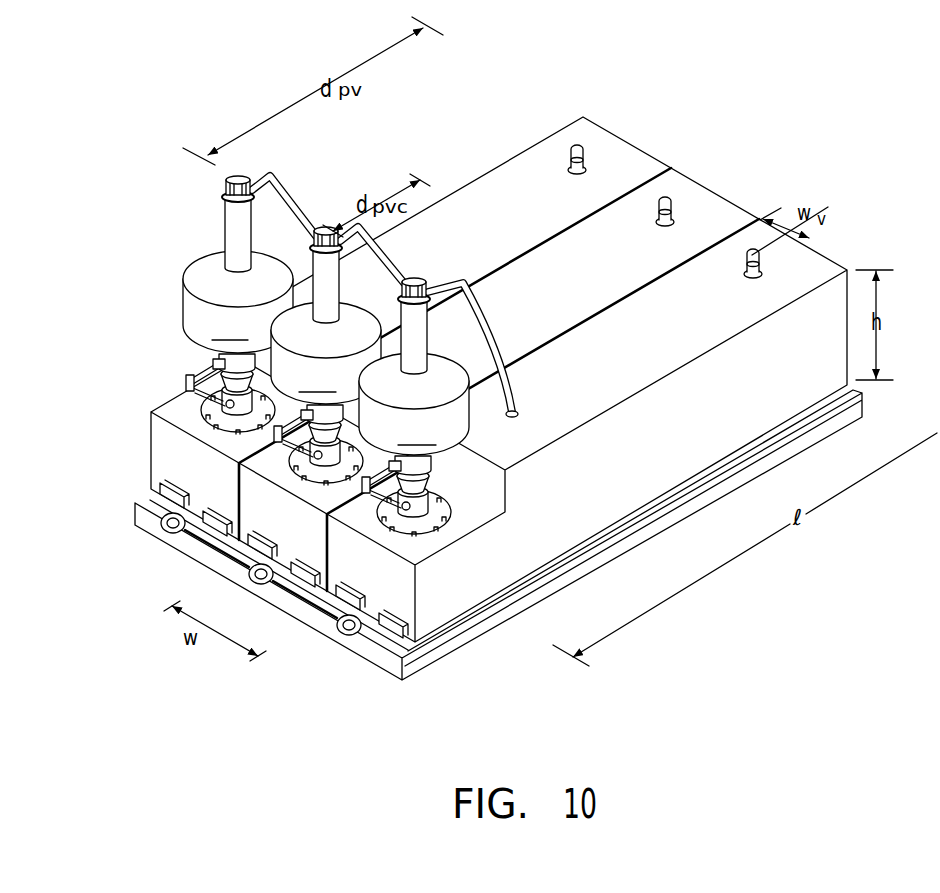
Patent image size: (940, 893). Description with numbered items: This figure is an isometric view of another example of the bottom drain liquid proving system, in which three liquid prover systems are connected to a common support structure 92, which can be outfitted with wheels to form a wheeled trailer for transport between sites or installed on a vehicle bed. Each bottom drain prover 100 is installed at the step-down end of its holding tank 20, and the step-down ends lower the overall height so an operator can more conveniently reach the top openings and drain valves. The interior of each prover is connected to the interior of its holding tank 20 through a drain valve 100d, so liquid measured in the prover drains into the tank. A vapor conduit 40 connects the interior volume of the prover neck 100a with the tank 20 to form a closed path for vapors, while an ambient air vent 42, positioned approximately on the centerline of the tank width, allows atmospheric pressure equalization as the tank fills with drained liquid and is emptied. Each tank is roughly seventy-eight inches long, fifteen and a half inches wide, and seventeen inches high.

The holding tank 20 is at (632, 158).
The vapor conduit 40 is at (493, 337).
The ambient air vent 42 is at (577, 148).
The common support structure 92 is at (480, 627).
The bottom drain prover 100 is at (326, 381).
The neck 100a is at (238, 222).
The drain valve 100d is at (209, 363).